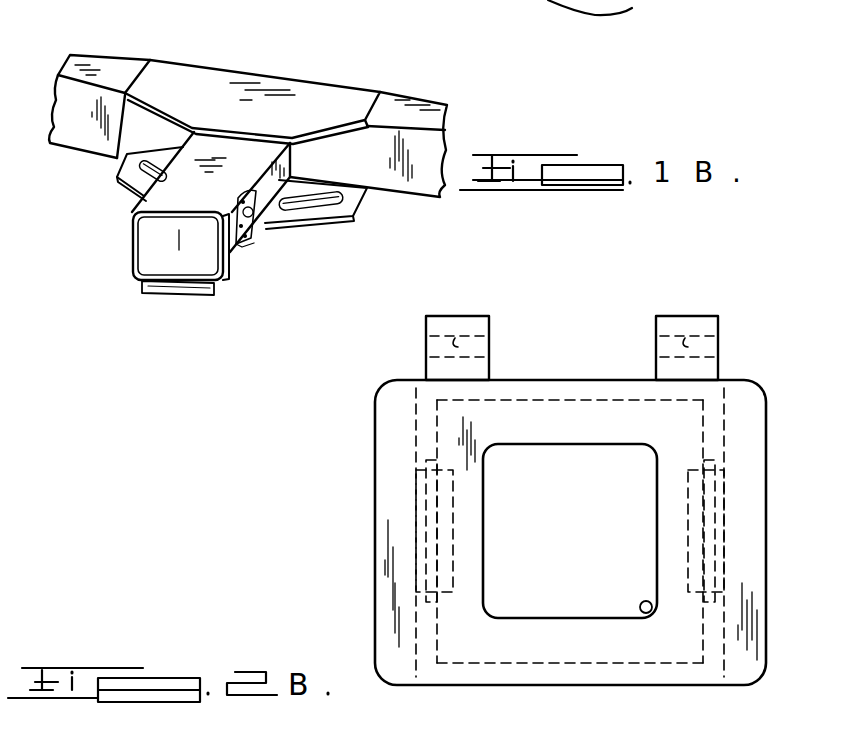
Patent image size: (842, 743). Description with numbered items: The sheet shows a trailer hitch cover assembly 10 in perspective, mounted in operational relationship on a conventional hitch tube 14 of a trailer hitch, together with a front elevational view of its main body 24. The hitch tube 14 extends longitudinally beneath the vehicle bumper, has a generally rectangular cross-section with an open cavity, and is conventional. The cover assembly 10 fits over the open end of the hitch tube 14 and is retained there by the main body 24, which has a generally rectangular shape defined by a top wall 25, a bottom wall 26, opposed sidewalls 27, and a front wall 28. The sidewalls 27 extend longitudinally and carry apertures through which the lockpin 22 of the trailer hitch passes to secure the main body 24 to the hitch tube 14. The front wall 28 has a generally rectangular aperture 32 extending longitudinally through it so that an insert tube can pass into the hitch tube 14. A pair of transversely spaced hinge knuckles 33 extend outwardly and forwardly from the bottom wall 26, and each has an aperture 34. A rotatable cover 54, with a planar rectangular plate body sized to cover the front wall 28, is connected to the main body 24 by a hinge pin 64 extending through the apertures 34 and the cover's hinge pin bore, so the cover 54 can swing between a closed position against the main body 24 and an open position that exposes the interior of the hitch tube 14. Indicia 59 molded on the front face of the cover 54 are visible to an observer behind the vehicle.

In FIG. 1B, the trailer hitch cover assembly 10 is at (103, 280).
In FIG. 1B, the hitch tube 14 is at (224, 152).
In FIG. 1B, the lockpin 22 is at (255, 214).
In FIG. 1B, the main body 24 is at (232, 281).
In FIG. 2B, the main body 24 is at (767, 514).
In FIG. 2B, the top wall 25 is at (566, 677).
In FIG. 2B, the bottom wall 26 is at (543, 389).
In FIG. 2B, the sidewalls 27 is at (428, 423).
In FIG. 2B, the front wall 28 is at (468, 653).
In FIG. 2B, the aperture 32 is at (643, 618).
In FIG. 2B, the hinge knuckles 33 is at (461, 323).
In FIG. 2B, the aperture 34 is at (454, 344).
In FIG. 1B, the cover 54 is at (135, 281).
In FIG. 1B, the indicia 59 is at (148, 243).
In FIG. 1B, the hinge pin 64 is at (207, 292).